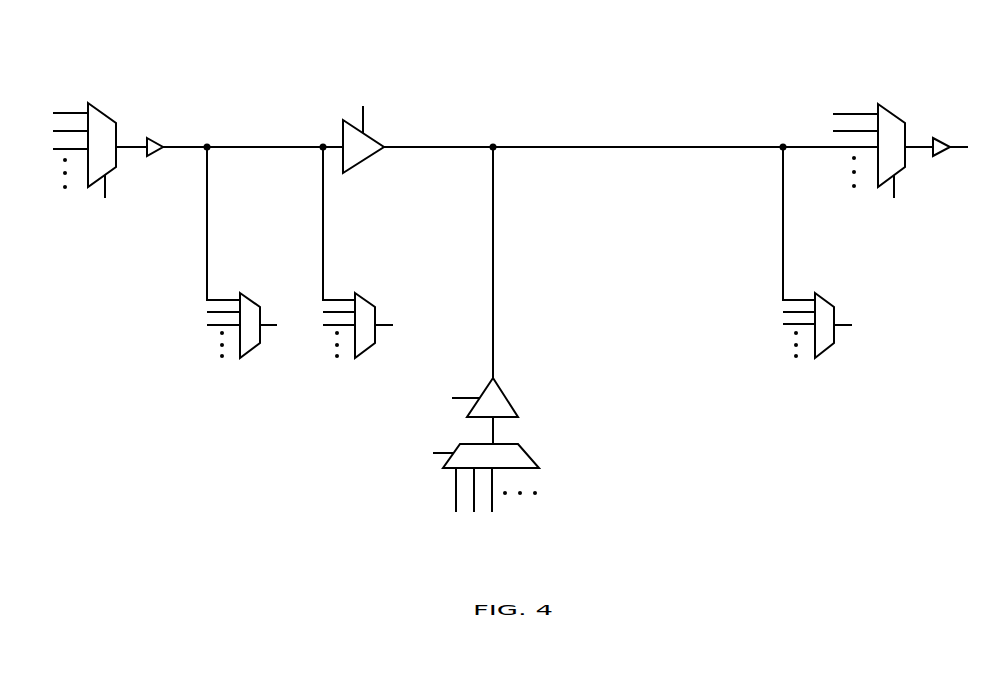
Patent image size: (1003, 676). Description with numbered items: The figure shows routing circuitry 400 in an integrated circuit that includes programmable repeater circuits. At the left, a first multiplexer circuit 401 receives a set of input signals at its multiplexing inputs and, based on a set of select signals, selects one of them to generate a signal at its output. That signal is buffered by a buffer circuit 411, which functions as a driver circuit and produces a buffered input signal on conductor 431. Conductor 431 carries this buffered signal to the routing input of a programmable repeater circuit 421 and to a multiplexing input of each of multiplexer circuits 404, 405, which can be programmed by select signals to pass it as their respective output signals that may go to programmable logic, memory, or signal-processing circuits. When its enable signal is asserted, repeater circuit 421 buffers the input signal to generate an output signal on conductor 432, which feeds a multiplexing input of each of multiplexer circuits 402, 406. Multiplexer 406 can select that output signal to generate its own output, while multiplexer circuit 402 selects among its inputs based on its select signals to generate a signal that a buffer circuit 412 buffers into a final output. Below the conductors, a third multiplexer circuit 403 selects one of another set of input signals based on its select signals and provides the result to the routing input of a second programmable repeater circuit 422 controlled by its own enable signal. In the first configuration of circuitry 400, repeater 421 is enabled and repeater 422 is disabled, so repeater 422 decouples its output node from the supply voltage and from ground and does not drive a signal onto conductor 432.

The routing circuitry 400 is at (196, 46).
The multiplexer circuit 401 is at (103, 110).
The multiplexer circuit 402 is at (893, 113).
The multiplexer circuit 403 is at (530, 457).
The multiplexer circuit 404 is at (250, 300).
The multiplexer circuit 405 is at (366, 300).
The multiplexer circuit 406 is at (825, 300).
The buffer circuit 411 is at (155, 140).
The buffer circuit 412 is at (942, 137).
The programmable repeater circuit 421 is at (363, 162).
The programmable repeater circuit 422 is at (507, 393).
The conductor 431 is at (298, 154).
The conductor 432 is at (582, 154).